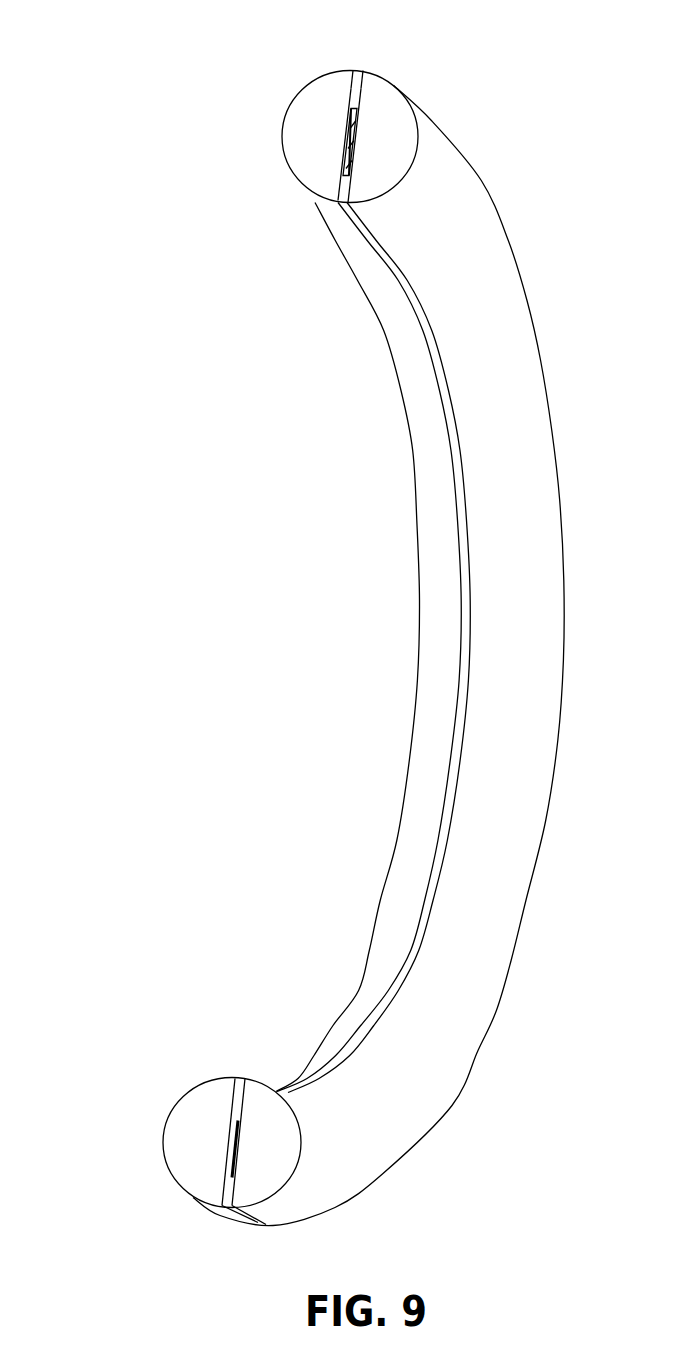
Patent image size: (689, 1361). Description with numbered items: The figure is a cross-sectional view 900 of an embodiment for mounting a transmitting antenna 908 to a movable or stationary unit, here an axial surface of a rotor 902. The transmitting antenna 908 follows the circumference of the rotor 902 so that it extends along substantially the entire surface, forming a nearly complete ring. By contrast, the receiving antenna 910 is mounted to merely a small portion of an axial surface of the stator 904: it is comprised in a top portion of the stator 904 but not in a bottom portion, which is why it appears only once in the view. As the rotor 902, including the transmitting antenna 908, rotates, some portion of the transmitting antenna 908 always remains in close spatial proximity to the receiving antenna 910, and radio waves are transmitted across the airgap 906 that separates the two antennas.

The cross-sectional view 900 is at (143, 35).
The rotor 902 is at (433, 93).
The stator 904 is at (303, 75).
The airgap 906 is at (360, 70).
The transmitting antenna 908 is at (353, 140).
The receiving antenna 910 is at (347, 137).